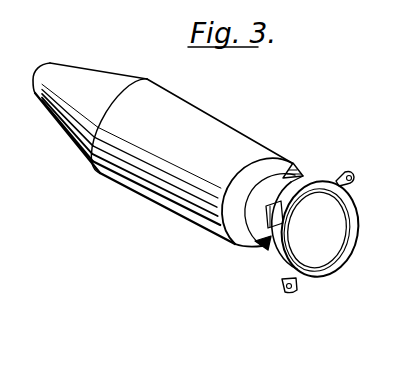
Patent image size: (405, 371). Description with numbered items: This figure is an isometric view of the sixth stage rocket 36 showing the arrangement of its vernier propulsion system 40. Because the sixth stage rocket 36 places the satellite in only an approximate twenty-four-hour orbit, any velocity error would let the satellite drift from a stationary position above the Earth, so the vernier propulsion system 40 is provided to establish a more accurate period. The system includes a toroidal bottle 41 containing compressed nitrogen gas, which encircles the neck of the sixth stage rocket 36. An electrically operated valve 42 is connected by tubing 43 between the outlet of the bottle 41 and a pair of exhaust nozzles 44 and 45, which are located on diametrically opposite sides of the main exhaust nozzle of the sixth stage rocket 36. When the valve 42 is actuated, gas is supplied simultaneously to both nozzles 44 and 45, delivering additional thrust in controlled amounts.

The sixth stage rocket 36 is at (223, 121).
The vernier propulsion system 40 is at (335, 230).
The toroidal bottle 41 is at (293, 163).
The electrically operated valve 42 is at (262, 248).
The tubing 43 is at (295, 203).
The exhaust nozzle 44 is at (351, 180).
The exhaust nozzle 45 is at (293, 297).